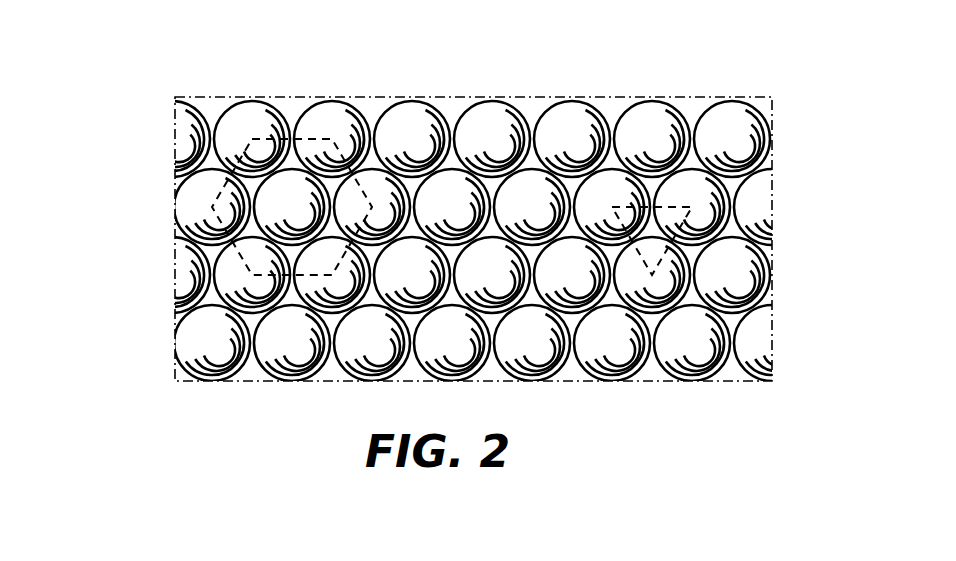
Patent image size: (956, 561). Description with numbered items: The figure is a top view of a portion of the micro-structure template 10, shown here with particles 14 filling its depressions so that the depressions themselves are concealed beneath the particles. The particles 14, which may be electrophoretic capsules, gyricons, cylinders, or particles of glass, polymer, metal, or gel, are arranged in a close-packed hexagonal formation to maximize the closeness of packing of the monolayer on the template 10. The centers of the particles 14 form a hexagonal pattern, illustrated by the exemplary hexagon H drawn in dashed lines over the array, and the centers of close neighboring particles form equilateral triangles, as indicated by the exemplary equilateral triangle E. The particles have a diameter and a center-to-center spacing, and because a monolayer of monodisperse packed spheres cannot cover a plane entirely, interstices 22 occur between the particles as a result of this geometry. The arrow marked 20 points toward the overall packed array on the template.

The micro-structure template 10 is at (173, 120).
The particles 14 is at (474, 121).
The lens array 20 is at (128, 233).
The interstices 22 is at (728, 318).
The exemplary hexagon H is at (315, 138).
The exemplary equilateral triangle E is at (675, 204).